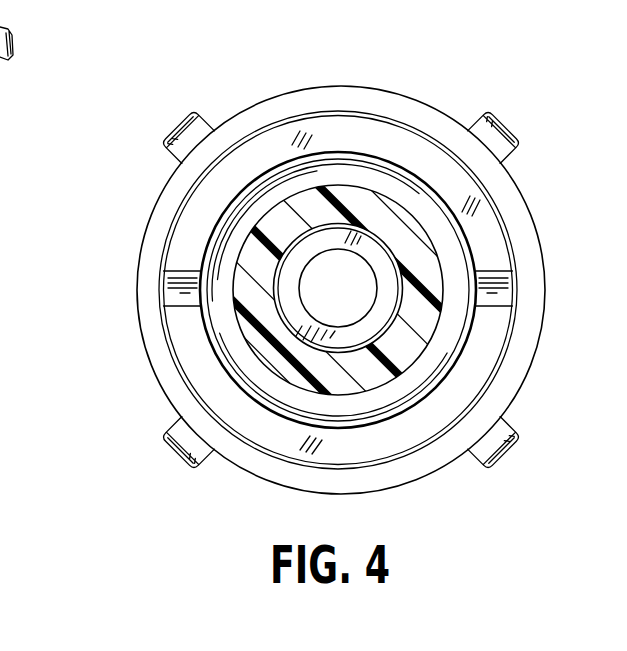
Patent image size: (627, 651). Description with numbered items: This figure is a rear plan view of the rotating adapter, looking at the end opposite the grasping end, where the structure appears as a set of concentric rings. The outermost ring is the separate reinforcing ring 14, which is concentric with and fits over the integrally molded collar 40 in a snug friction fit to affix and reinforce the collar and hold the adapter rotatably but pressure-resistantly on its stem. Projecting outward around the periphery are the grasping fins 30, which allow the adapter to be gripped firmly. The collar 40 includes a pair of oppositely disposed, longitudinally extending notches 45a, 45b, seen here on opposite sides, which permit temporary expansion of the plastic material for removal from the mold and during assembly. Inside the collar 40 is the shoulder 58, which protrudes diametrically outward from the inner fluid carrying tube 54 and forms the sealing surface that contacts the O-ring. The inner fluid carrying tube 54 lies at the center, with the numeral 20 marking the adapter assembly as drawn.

The reinforcing ring 14 is at (331, 120).
The housing / outer rim 20 is at (123, 376).
The grasping fins 30 is at (10, 30).
The collar 40 is at (262, 167).
The notch 45a is at (142, 290).
The notch 45b is at (525, 290).
The inner fluid carrying tube 54 is at (385, 284).
The shoulder 58 is at (368, 208).